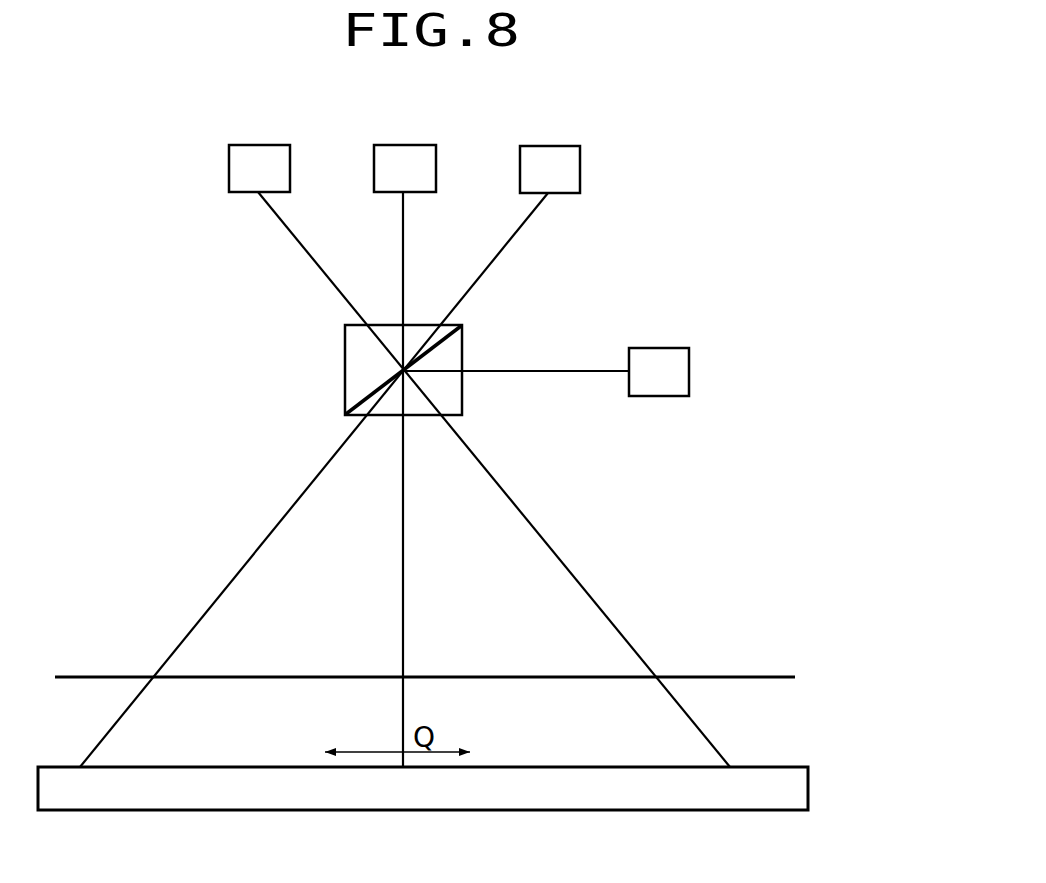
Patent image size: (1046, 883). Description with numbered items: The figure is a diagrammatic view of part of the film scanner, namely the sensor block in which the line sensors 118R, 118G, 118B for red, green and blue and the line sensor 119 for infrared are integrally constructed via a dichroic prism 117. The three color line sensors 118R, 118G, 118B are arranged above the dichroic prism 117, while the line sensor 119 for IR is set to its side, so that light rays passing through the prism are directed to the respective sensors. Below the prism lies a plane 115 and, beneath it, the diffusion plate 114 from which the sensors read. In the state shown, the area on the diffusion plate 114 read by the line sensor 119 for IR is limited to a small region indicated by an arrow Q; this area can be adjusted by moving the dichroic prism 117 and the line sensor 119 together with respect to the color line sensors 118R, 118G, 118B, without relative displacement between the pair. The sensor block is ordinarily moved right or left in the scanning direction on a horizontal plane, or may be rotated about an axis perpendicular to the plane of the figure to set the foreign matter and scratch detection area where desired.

The line sensor for R 118R is at (229, 170).
The line sensor for G 118G is at (374, 170).
The line sensor for B 118B is at (581, 172).
The line sensor for IR 119 is at (651, 347).
The dichroic prism 117 is at (462, 396).
The lens / optical plane 115 is at (771, 676).
The diffusion plate 114 is at (809, 790).